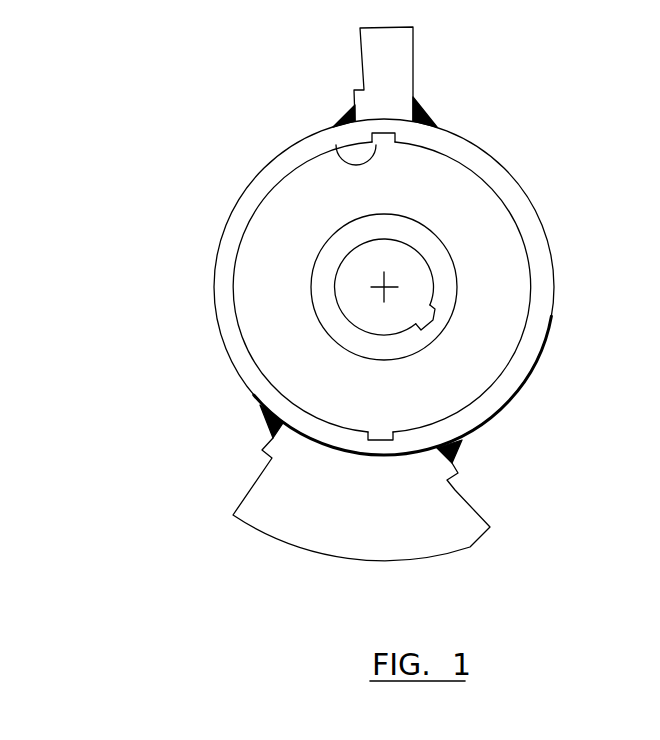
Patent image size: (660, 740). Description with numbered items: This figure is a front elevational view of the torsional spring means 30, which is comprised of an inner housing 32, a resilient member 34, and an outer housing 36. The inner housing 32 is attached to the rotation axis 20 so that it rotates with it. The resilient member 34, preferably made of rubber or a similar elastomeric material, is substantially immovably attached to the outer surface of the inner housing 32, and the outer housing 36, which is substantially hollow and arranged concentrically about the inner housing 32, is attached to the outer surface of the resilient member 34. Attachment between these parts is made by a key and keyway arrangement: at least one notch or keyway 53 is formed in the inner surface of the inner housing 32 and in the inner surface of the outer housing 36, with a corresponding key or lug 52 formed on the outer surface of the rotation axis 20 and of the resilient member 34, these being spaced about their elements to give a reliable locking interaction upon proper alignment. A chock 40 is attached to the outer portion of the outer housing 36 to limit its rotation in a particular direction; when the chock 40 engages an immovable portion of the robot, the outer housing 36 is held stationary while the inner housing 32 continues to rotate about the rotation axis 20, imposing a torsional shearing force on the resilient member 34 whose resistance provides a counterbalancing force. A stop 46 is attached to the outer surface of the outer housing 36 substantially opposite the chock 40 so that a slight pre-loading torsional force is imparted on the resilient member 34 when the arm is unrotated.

The rotation axis 20 is at (383, 285).
The torsional spring means 30 is at (547, 211).
The inner housing 32 is at (348, 335).
The resilient member 34 is at (265, 350).
The outer housing 36 is at (488, 408).
The chock 40 is at (325, 537).
The stop 46 is at (400, 80).
The key or lug 52 is at (396, 138).
The notch or keyway 53 is at (337, 147).